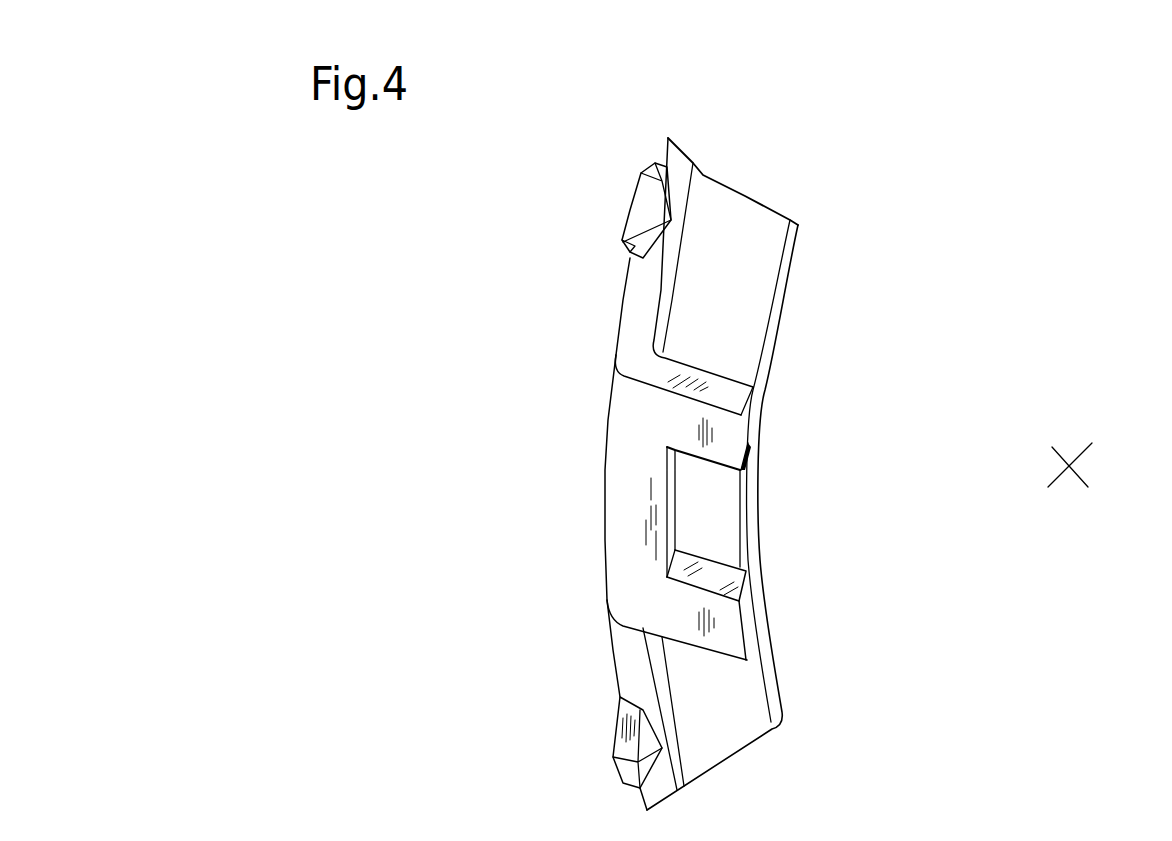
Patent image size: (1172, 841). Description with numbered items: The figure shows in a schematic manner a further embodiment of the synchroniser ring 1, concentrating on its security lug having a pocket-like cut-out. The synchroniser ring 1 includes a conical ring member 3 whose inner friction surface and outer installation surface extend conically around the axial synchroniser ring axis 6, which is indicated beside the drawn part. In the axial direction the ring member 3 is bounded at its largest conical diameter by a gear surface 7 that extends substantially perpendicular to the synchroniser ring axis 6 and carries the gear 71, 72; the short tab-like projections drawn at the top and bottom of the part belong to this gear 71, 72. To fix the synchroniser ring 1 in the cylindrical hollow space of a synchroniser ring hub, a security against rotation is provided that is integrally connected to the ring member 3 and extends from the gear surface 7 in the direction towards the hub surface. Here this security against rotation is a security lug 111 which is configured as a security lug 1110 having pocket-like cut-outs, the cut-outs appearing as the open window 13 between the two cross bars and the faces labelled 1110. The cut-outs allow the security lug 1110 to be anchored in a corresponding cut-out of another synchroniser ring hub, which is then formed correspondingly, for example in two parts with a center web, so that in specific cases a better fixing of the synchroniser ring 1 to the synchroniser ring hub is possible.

The synchroniser ring 1 is at (980, 142).
The conical ring member 3 is at (743, 222).
The synchroniser ring axis 6 is at (1070, 465).
The gear surface 7 is at (622, 319).
The opening 13 is at (730, 533).
The gear 71 is at (593, 475).
The tab 72 is at (628, 215).
The security lug 111 is at (617, 531).
The security lug having pocket-like cut-outs 1110 is at (718, 440).